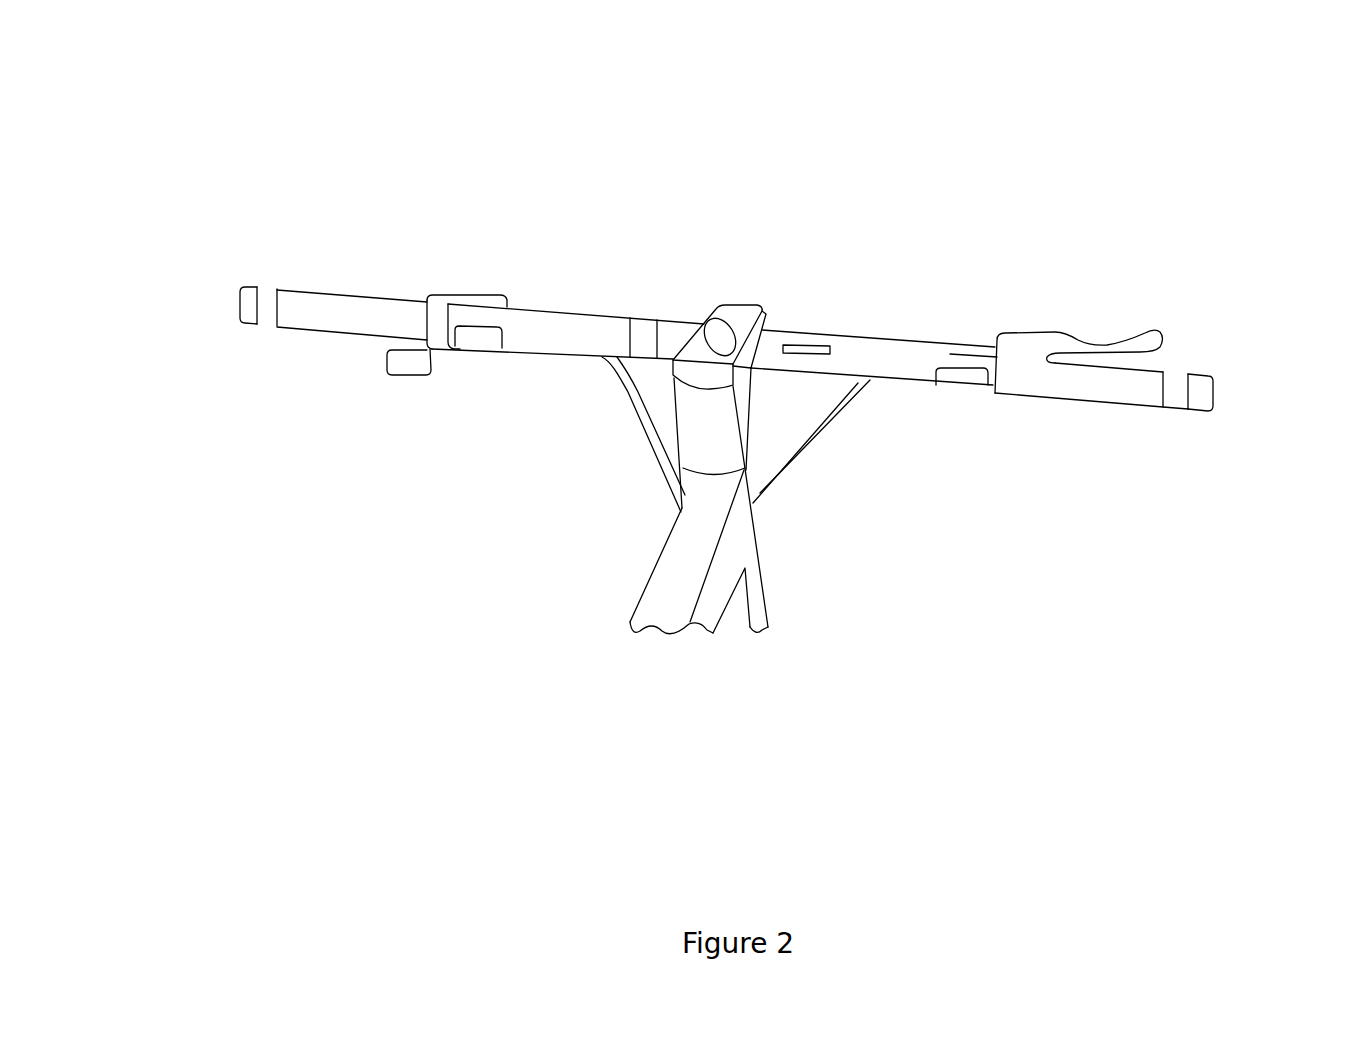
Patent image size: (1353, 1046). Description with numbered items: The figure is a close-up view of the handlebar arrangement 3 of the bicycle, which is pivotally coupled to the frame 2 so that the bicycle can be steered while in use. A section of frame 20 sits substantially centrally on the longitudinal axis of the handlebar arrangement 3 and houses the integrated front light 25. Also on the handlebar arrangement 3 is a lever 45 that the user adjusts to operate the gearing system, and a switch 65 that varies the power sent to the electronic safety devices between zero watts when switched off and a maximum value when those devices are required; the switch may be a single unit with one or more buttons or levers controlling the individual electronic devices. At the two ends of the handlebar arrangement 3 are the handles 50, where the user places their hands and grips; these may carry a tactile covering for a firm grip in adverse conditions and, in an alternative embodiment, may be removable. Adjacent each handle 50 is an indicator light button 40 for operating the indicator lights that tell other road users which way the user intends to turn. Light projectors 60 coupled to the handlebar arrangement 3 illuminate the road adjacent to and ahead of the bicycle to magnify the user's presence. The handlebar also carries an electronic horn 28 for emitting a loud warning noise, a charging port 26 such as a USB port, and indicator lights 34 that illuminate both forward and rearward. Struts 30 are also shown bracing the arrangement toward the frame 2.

The frame 2 is at (655, 562).
The handlebar arrangement 3 is at (565, 141).
The section of frame 20 is at (713, 308).
The integrated front light 25 is at (746, 304).
The charging port 26 is at (808, 343).
The electronic horn 28 is at (648, 321).
The support strut 30 is at (640, 408).
The indicator lights 34 is at (270, 292).
The indicator light button 40 is at (482, 338).
The lever 45 is at (402, 366).
The handle 50 is at (309, 330).
The light projector 60 is at (240, 307).
The switch 65 is at (756, 307).